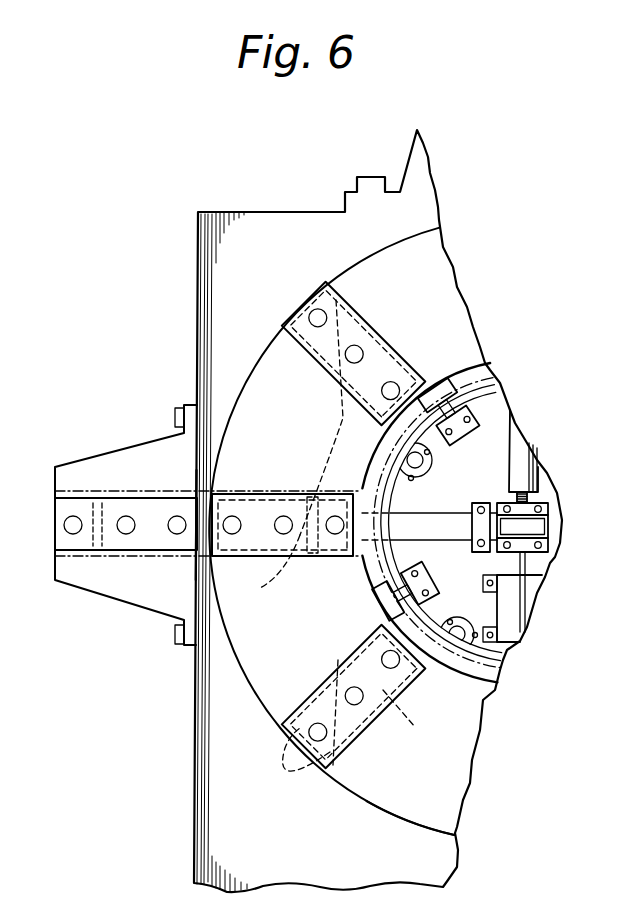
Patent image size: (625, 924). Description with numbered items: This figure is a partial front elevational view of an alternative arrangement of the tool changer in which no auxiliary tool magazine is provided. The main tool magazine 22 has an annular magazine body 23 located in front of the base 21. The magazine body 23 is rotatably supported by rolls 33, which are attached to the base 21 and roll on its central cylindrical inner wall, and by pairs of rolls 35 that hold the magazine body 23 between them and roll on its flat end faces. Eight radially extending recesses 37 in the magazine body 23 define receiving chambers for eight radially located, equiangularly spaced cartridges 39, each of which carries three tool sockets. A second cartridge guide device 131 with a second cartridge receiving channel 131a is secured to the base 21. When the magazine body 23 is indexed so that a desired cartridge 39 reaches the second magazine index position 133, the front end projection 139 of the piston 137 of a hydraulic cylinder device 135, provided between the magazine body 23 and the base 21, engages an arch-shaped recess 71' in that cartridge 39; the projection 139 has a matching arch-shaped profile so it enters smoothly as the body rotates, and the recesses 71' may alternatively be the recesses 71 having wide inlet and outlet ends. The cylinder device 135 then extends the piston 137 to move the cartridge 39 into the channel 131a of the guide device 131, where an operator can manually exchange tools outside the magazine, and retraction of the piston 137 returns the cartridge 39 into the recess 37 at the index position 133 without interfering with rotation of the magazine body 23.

The base 21 is at (193, 852).
The main tool magazine 22 is at (254, 693).
The magazine body 23 is at (372, 798).
The rolls 33 is at (432, 458).
The rolls 35 is at (441, 380).
The radially extending recesses 37 is at (290, 767).
The cartridges 39 is at (352, 304).
The recesses 71 is at (321, 417).
The recess 71' is at (390, 712).
The second cartridge guide device 131 is at (153, 548).
The second cartridge receiving channel 131a is at (128, 548).
The second magazine index position 133 is at (206, 524).
The hydraulic cylinder device 135 is at (414, 520).
The piston 137 is at (318, 556).
The front end projection 139 is at (266, 577).